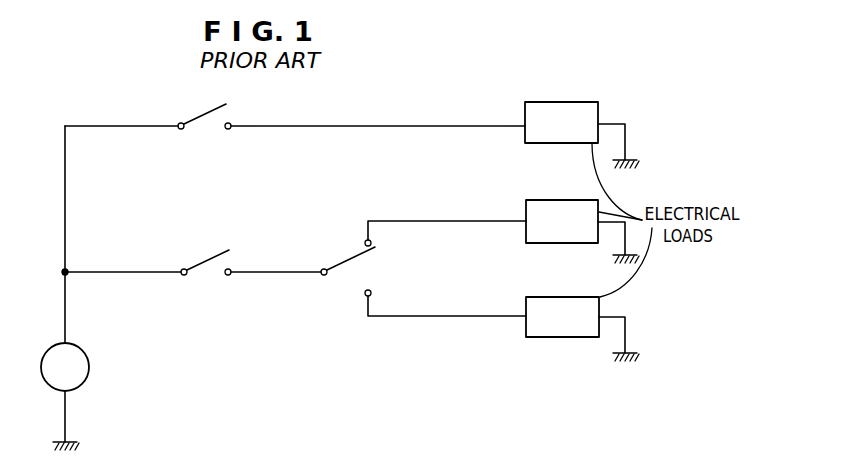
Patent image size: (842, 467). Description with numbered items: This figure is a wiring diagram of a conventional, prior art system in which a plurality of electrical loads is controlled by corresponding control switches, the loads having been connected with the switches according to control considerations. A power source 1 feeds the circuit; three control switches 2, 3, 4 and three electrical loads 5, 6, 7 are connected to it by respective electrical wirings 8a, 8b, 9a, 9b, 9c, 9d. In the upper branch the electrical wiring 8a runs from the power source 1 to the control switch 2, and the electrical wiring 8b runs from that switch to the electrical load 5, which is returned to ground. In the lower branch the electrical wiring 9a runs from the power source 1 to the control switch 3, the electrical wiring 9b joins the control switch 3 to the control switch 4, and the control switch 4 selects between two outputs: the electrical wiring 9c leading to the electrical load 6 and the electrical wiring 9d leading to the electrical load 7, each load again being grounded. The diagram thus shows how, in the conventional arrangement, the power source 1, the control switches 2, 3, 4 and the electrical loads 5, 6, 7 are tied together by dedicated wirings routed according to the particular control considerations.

The power source 1 is at (81, 387).
The control switch 2 is at (206, 130).
The control switch 3 is at (211, 269).
The control switch 4 is at (339, 260).
The electrical load 5 is at (553, 101).
The electrical load 6 is at (560, 199).
The electrical load 7 is at (560, 297).
The electrical wiring 8a is at (126, 130).
The electrical wiring 8b is at (385, 127).
The electrical wiring 9a is at (124, 268).
The electrical wiring 9b is at (277, 268).
The electrical wiring 9c is at (437, 220).
The electrical wiring 9d is at (438, 318).